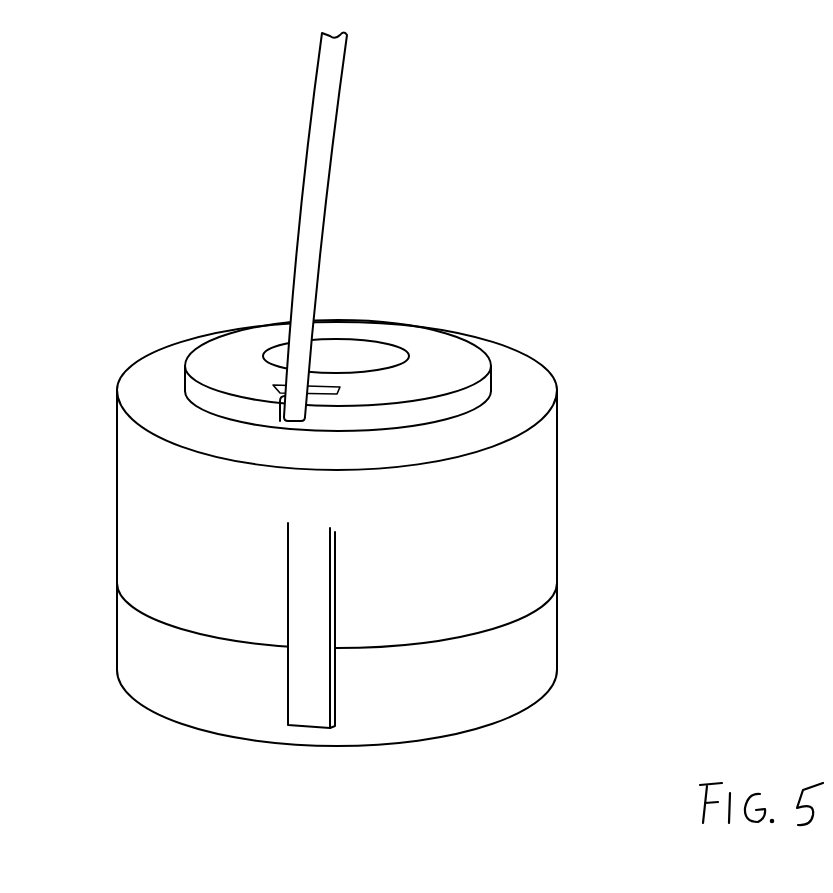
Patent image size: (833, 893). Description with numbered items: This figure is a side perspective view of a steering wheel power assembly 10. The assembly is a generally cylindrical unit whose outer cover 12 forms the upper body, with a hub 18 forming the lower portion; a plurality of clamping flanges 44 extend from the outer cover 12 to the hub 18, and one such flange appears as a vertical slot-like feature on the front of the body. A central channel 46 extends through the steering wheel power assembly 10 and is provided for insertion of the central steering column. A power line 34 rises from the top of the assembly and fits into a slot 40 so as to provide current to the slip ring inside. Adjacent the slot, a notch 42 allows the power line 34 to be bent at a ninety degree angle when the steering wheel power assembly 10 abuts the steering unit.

The steering wheel power assembly 10 is at (336, 390).
The outer cover 12 is at (537, 476).
The hub 18 is at (538, 640).
The power line 34 is at (318, 185).
The slot 40 is at (275, 384).
The notch 42 is at (281, 421).
The clamping flanges 44 is at (307, 622).
The central channel 46 is at (378, 350).